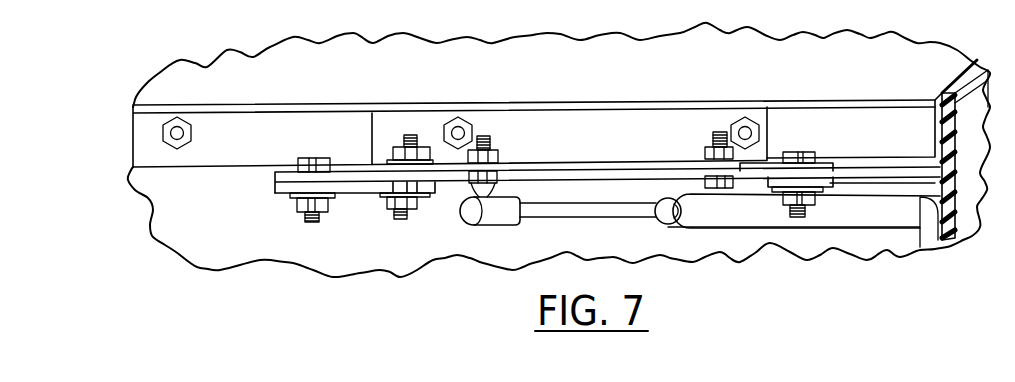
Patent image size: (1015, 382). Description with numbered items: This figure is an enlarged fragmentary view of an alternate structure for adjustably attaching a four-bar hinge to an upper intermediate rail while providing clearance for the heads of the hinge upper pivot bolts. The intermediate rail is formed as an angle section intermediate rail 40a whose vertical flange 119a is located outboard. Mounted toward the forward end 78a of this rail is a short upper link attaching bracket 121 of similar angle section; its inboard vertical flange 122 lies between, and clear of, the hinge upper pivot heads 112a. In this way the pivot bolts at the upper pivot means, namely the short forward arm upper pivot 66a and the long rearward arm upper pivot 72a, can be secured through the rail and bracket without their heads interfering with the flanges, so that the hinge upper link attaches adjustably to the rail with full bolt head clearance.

The angle section intermediate rail 40a is at (238, 134).
The vertical flange 119a is at (346, 112).
The short upper link attaching bracket 121 is at (527, 135).
The inboard vertical flange 122 is at (594, 168).
The forward end 78a is at (790, 124).
The hinge upper pivot heads 112a is at (310, 158).
The long arm upper pivot 72a is at (312, 216).
The short arm upper pivot 66a is at (818, 198).